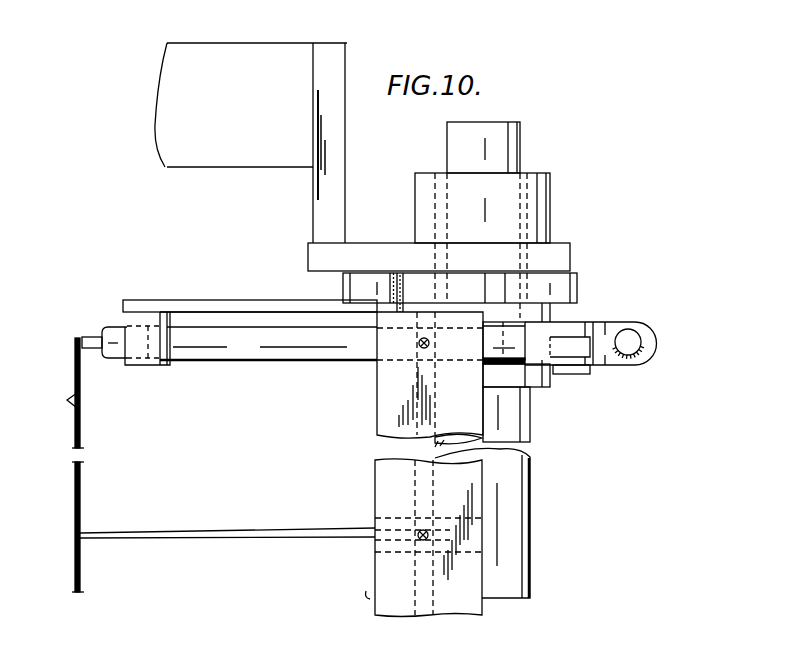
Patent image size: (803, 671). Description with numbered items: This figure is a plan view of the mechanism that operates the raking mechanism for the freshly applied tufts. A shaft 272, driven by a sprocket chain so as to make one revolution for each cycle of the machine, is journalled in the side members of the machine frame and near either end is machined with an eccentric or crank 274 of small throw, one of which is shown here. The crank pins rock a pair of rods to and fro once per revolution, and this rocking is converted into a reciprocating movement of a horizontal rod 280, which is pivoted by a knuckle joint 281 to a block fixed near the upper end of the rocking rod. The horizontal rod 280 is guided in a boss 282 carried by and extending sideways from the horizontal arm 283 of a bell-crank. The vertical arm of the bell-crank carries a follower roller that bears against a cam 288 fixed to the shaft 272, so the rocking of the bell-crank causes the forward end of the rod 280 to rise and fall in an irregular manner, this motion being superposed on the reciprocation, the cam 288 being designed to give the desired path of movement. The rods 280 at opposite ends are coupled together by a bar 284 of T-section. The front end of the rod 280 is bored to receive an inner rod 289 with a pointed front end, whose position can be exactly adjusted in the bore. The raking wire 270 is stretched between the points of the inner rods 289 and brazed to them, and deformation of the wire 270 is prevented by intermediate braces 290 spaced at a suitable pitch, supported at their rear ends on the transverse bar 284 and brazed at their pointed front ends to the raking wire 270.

The raking wire 270 is at (77, 400).
The shaft 272 is at (518, 161).
The eccentric or crank 274 is at (513, 362).
The horizontal rod 280 is at (233, 348).
The knuckle joint 281 is at (585, 343).
The boss 282 is at (137, 347).
The horizontal arm of bell-crank 283 is at (220, 300).
The bar of T-section 284 is at (375, 497).
The cam 288 is at (578, 296).
The inner rod 289 is at (94, 334).
The intermediate brace 290 is at (145, 539).